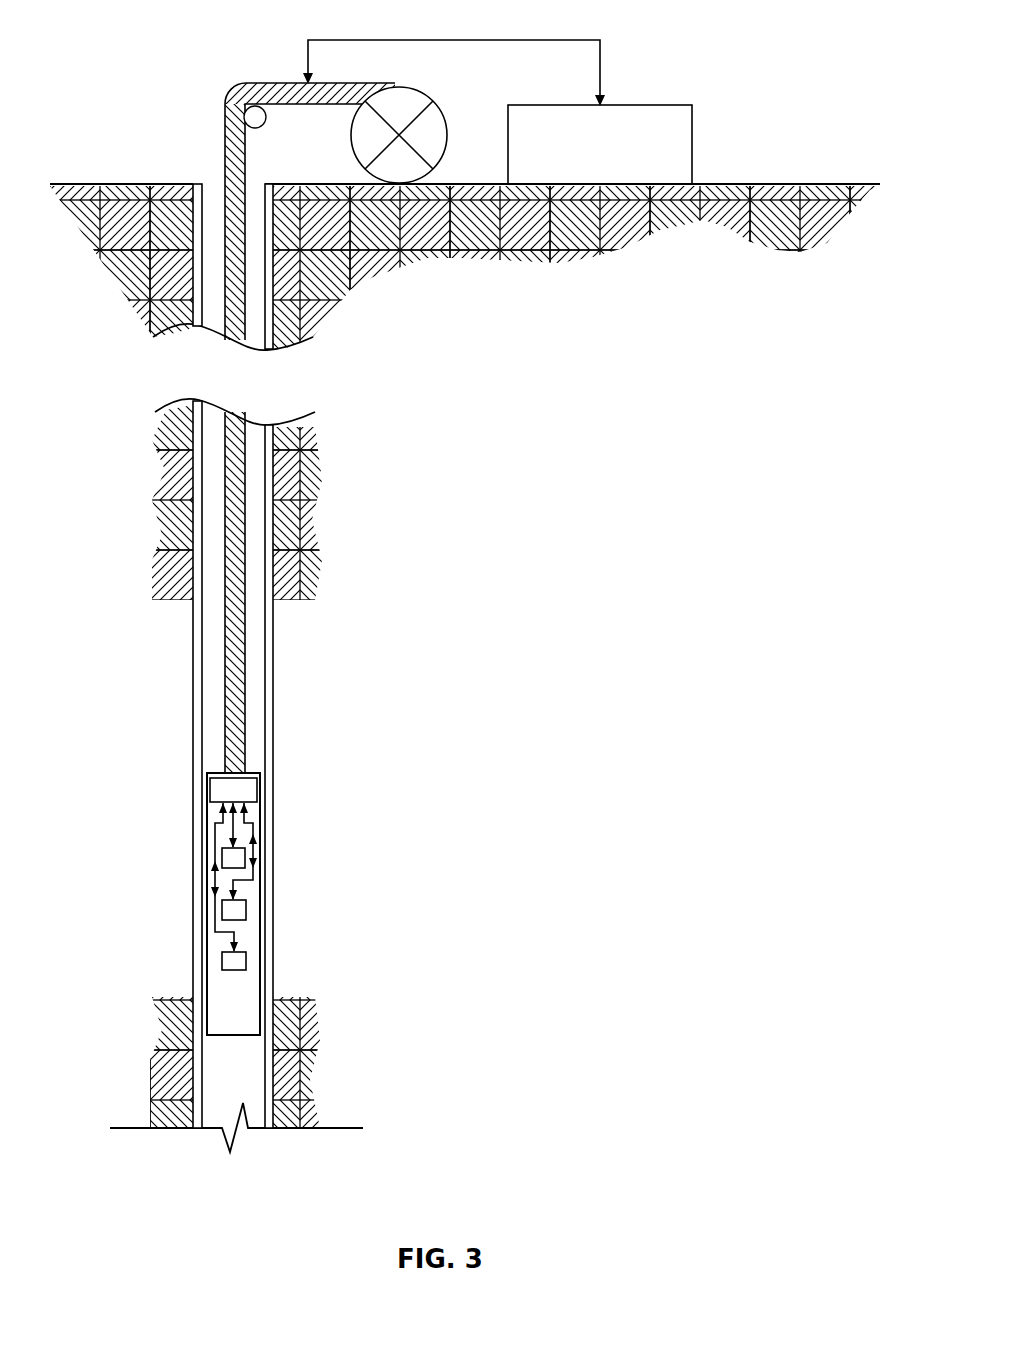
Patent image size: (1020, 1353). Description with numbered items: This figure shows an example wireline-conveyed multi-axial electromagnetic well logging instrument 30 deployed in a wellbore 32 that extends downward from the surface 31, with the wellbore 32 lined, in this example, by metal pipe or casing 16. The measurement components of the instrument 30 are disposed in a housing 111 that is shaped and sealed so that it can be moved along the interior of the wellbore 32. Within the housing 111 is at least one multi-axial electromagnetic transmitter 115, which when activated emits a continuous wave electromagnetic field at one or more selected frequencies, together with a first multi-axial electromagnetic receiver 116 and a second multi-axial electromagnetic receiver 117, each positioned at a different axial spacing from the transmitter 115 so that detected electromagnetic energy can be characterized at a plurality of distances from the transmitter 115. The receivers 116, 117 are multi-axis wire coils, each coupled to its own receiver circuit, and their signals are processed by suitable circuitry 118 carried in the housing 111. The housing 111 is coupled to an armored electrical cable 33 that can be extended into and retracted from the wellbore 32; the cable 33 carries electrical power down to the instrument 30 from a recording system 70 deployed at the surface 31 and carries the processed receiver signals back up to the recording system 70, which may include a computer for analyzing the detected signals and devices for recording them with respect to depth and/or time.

The casing 16 is at (193, 679).
The multi-axial electromagnetic well logging instrument 30 is at (226, 886).
The surface 31 is at (76, 183).
The wellbore 32 is at (213, 186).
The armored electrical cable 33 is at (258, 86).
The recording system 70 is at (660, 105).
The housing 111 is at (202, 988).
The multi-axial electromagnetic transmitter 115 is at (248, 962).
The multi-axial electromagnetic receiver 116 is at (248, 910).
The multi-axial electromagnetic receiver 117 is at (222, 858).
The circuitry 118 is at (260, 790).